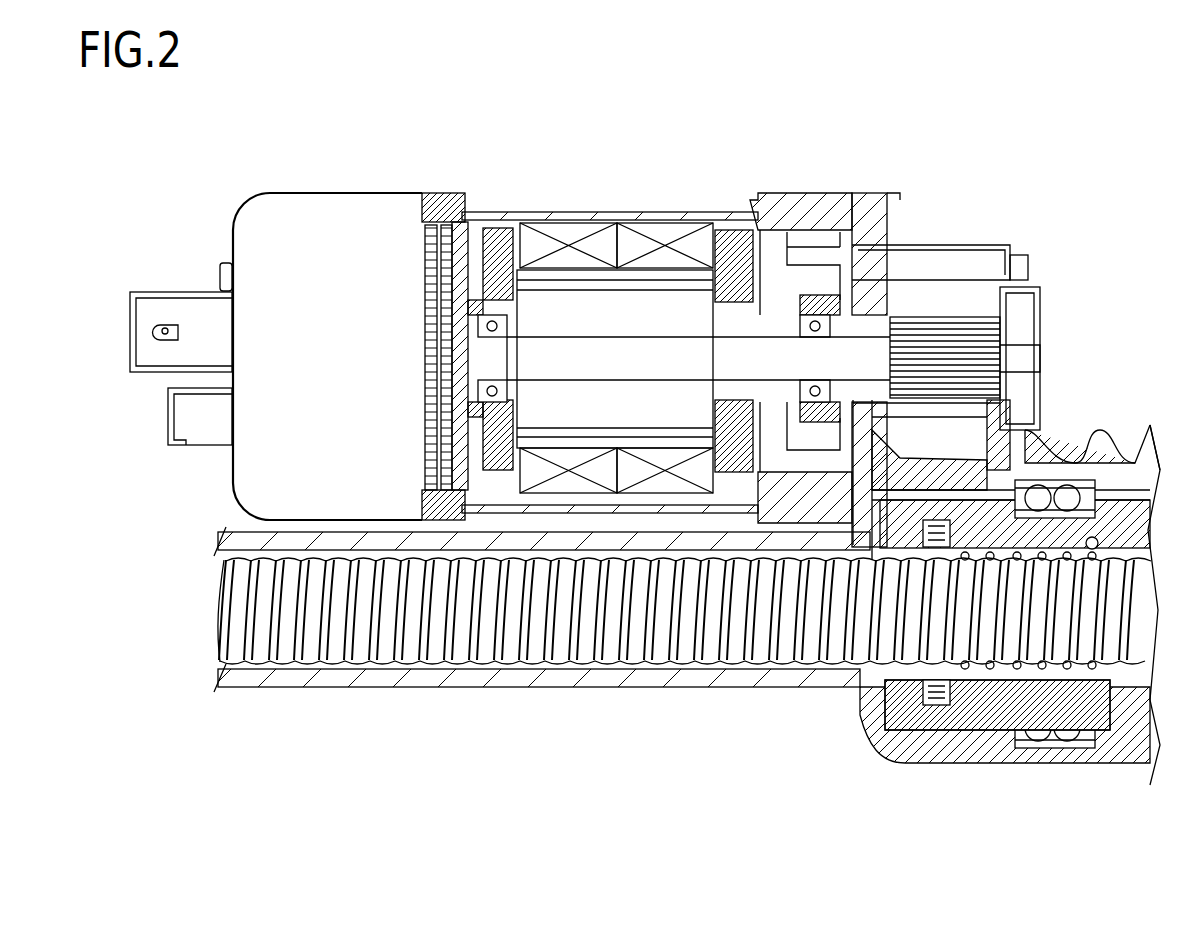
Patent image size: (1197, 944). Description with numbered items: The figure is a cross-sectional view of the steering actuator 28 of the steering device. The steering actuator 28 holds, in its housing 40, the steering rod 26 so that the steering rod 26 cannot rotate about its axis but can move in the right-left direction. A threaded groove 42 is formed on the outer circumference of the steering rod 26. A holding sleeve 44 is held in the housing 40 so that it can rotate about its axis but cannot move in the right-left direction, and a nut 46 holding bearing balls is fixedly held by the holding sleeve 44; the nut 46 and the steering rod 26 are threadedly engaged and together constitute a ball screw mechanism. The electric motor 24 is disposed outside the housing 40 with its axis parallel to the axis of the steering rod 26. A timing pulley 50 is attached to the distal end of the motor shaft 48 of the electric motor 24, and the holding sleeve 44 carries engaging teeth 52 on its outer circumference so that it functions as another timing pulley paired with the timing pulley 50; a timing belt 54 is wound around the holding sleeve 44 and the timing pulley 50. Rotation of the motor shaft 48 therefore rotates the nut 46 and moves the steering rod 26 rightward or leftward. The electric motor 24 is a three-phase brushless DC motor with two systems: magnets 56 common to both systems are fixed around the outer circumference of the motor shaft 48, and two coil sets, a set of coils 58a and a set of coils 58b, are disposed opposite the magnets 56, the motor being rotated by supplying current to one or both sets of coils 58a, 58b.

The electric motor 24 is at (767, 166).
The steering rod 26 is at (508, 672).
The steering actuator 28 is at (1075, 82).
The housing 40 is at (700, 687).
The threaded groove 42 is at (597, 678).
The holding sleeve 44 is at (937, 720).
The nut 46 is at (972, 705).
The motor shaft 48 is at (833, 350).
The timing pulley 50 is at (975, 337).
The engaging teeth 52 is at (980, 733).
The timing belt 54 is at (978, 430).
The magnets 56 is at (600, 300).
The coils 58a is at (564, 228).
The coils 58b is at (665, 233).